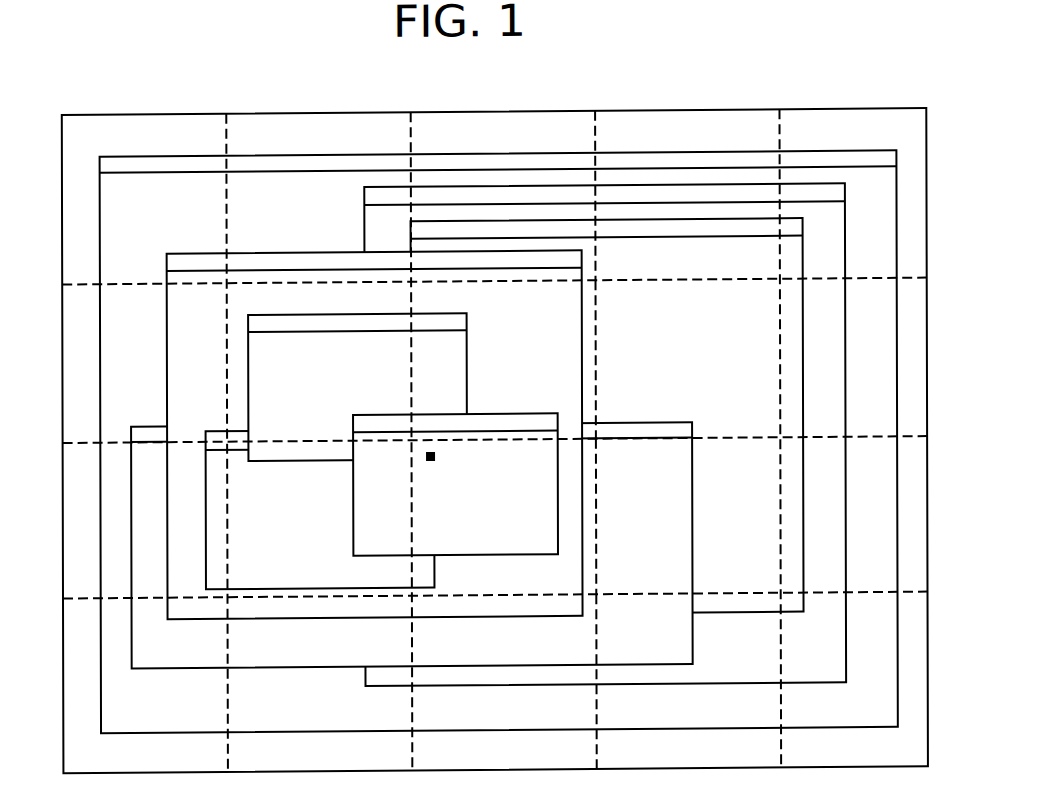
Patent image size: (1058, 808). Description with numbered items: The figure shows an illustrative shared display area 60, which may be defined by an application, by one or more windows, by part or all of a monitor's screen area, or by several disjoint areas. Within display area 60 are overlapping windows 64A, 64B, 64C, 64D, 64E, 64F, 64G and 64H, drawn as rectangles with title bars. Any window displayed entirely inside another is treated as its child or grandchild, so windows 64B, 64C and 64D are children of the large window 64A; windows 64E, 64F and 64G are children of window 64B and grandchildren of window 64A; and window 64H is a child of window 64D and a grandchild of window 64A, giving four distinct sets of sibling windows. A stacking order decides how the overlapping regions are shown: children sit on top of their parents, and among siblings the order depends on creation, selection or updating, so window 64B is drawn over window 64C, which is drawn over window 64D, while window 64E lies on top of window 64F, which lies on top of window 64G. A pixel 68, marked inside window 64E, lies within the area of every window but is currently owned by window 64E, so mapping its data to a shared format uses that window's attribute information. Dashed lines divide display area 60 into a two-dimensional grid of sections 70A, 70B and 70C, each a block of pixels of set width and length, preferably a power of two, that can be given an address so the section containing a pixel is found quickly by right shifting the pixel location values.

The display area 60 is at (825, 115).
The window 64A is at (162, 212).
The window 64B is at (220, 324).
The window 64C is at (186, 658).
The window 64D is at (838, 674).
The window 64E is at (404, 546).
The window 64F is at (306, 372).
The window 64G is at (282, 580).
The window 64H is at (769, 583).
The pixel 68 is at (433, 462).
The section 70A is at (596, 367).
The section 70B is at (596, 533).
The section 70C is at (595, 660).